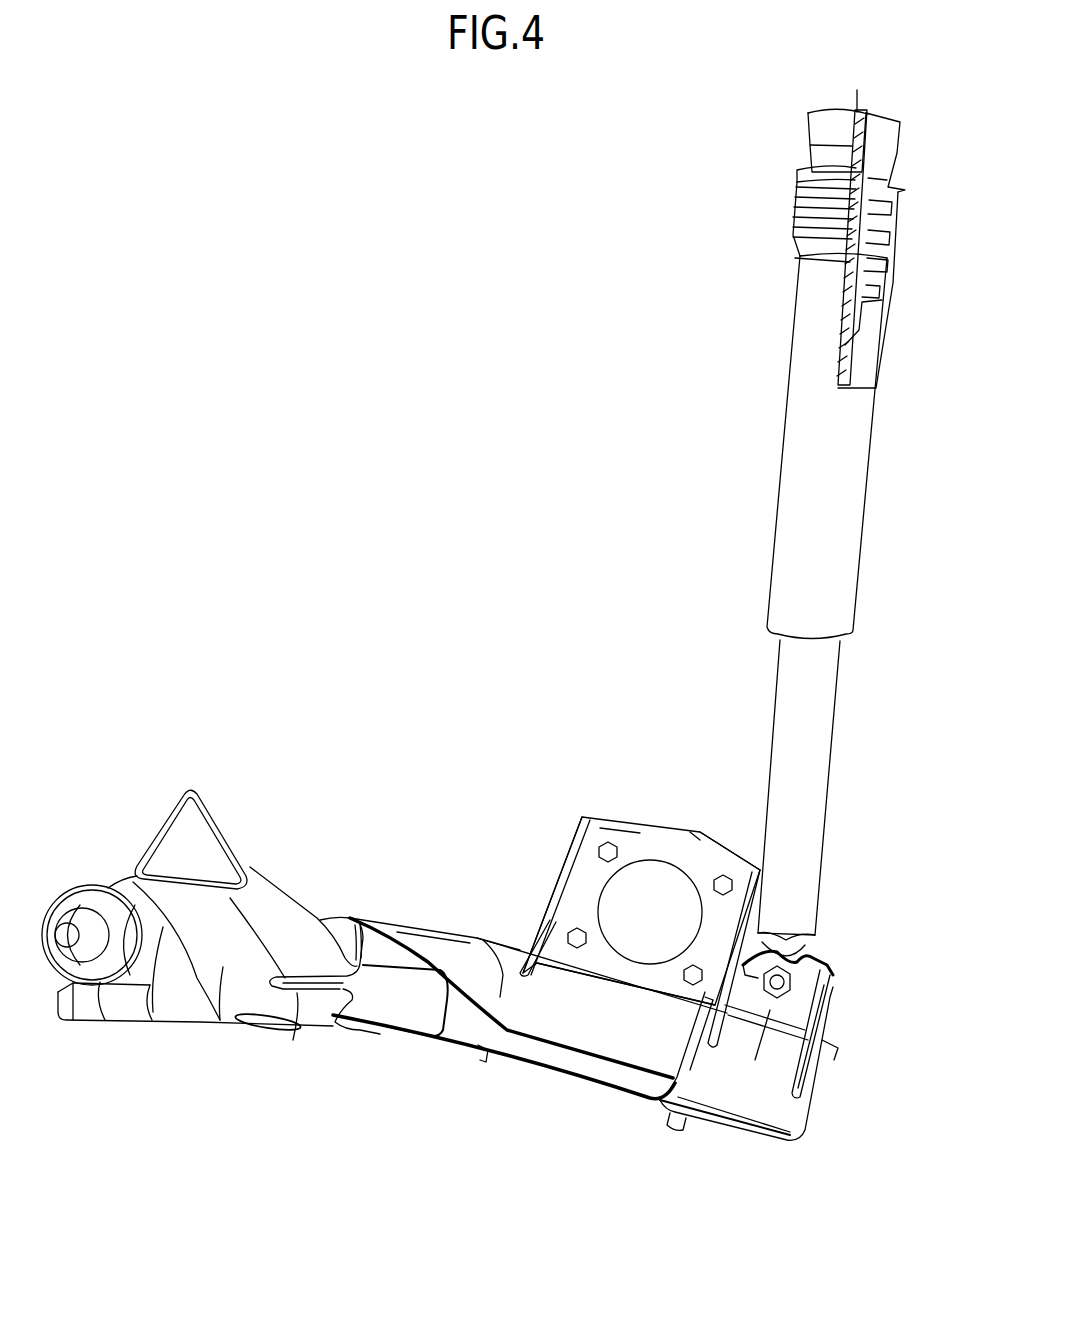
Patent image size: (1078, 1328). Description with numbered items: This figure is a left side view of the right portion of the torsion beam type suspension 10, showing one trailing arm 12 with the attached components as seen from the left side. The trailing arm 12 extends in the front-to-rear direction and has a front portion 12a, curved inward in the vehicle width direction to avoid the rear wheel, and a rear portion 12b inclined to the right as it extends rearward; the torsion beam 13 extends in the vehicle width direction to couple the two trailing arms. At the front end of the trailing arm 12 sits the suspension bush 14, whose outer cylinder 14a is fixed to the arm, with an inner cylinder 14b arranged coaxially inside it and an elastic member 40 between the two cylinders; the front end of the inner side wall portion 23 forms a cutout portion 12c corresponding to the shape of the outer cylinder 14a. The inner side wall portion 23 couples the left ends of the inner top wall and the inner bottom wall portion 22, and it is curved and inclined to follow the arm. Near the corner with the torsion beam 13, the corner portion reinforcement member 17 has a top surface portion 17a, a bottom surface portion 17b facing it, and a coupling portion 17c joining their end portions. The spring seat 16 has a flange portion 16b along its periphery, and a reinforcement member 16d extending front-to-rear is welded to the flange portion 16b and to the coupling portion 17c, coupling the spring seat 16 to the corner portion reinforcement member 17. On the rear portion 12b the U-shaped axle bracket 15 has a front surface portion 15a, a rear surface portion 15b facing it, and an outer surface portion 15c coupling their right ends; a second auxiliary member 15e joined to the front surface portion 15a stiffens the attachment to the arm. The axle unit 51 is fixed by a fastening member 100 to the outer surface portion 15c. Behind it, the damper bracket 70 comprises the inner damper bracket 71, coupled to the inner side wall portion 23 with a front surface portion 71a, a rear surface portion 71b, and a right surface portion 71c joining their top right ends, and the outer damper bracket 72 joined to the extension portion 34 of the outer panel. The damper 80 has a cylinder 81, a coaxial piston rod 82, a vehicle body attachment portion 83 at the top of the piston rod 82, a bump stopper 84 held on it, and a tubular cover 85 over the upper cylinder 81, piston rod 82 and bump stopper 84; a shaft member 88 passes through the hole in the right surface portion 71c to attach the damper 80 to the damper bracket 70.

The torsion beam type suspension 10 is at (215, 703).
The trailing arm 12 is at (418, 860).
The front portion of the trailing arm 12a is at (190, 1000).
The rear portion of the trailing arm 12b is at (518, 928).
The cutout portion 12c is at (120, 1000).
The torsion beam 13 is at (265, 895).
The suspension bush 14 is at (105, 795).
The outer cylinder 14a is at (115, 880).
The inner cylinder 14b is at (55, 920).
The axle bracket 15 is at (607, 783).
The front surface portion 15a is at (570, 845).
The rear surface portion 15b is at (690, 1010).
The outer surface portion 15c is at (672, 840).
The second auxiliary member 15e is at (548, 960).
The spring seat 16 is at (563, 1095).
The flange portion 16b is at (512, 1085).
The reinforcement member 16d is at (395, 1010).
The corner portion reinforcement member 17 is at (446, 918).
The top surface portion 17a is at (383, 927).
The bottom surface portion 17b is at (293, 1010).
The coupling portion 17c is at (475, 1045).
The inner bottom wall portion 22 is at (767, 1135).
The inner side wall portion 23 is at (800, 1130).
The extension portion 34 is at (830, 1045).
The elastic member 40 is at (70, 980).
The axle unit 51 is at (670, 880).
The damper bracket 70 is at (807, 1071).
The inner damper bracket 71 is at (835, 1000).
The front surface portion 71a is at (725, 1060).
The rear surface portion 71b is at (812, 1015).
The right surface portion 71c is at (790, 1000).
The outer damper bracket 72 is at (830, 972).
The damper 80 is at (688, 250).
The cylinder 81 is at (824, 731).
The piston rod 82 is at (878, 365).
The vehicle body attachment portion 83 is at (818, 134).
The bump stopper 84 is at (878, 243).
The tubular cover 85 is at (803, 357).
The shaft member 88 is at (790, 968).
The fastening member 100 is at (725, 885).